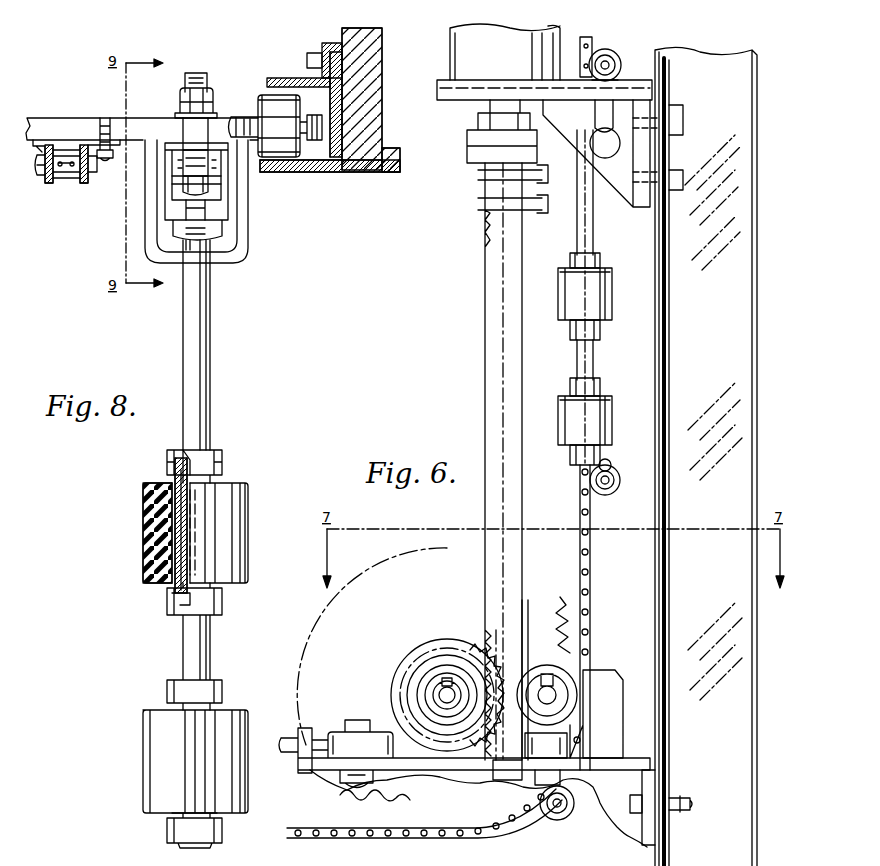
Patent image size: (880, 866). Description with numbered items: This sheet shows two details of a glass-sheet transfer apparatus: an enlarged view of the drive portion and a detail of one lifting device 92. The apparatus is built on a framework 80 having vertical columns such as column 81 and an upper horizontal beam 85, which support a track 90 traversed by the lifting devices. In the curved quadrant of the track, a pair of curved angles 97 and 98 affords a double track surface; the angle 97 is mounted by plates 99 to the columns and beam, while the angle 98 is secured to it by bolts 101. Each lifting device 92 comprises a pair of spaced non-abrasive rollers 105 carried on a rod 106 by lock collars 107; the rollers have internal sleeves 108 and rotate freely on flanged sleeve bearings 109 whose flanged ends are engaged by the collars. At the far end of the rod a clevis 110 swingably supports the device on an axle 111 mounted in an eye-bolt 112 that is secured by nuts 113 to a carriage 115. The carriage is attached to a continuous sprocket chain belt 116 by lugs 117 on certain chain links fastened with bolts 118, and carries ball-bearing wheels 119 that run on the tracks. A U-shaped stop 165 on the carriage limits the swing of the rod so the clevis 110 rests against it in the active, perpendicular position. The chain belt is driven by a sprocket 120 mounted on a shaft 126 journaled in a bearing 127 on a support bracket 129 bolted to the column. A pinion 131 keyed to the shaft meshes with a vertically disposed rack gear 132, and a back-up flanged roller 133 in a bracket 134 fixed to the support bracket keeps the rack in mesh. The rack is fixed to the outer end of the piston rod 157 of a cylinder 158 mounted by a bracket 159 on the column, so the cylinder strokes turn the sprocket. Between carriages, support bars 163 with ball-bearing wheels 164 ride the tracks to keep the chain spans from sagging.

In FIG. 6, the framework 80 is at (744, 150).
In FIG. 6, the column 81 is at (722, 176).
In FIG. 8, the upper horizontally disposed beam 85 is at (372, 94).
In FIG. 8, the track 90 is at (279, 172).
In FIG. 8, the lifting device 92 is at (142, 509).
In FIG. 6, the lifting device 92 is at (608, 274).
In FIG. 8, the angle 97 is at (310, 168).
In FIG. 8, the angle 98 is at (285, 78).
In FIG. 8, the plate 99 is at (352, 150).
In FIG. 8, the bolt 101 is at (314, 58).
In FIG. 8, the non-abrasive roller 105 is at (150, 545).
In FIG. 6, the non-abrasive roller 105 is at (595, 300).
In FIG. 8, the rod 106 is at (196, 350).
In FIG. 6, the rod 106 is at (582, 355).
In FIG. 8, the lock collar 107 is at (212, 465).
In FIG. 6, the lock collar 107 is at (595, 380).
In FIG. 8, the internal sleeve 108 is at (176, 559).
In FIG. 8, the flanged sleeve bearing 109 is at (174, 485).
In FIG. 8, the clevis 110 is at (175, 197).
In FIG. 8, the axle 111 is at (165, 190).
In FIG. 8, the eye-bolt 112 is at (190, 144).
In FIG. 8, the nut 113 is at (213, 96).
In FIG. 8, the carriage 115 is at (93, 118).
In FIG. 6, the carriage 115 is at (615, 100).
In FIG. 8, the sprocket chain belt 116 is at (71, 182).
In FIG. 6, the sprocket chain belt 116 is at (592, 44).
In FIG. 8, the lug 117 is at (85, 146).
In FIG. 8, the bolt 118 is at (106, 160).
In FIG. 8, the ball-bearing wheel 119 is at (268, 112).
In FIG. 6, the ball-bearing wheel 119 is at (620, 60).
In FIG. 6, the sprocket 120 is at (540, 633).
In FIG. 6, the shaft 126 is at (447, 693).
In FIG. 6, the bearing 127 is at (406, 666).
In FIG. 6, the support bracket 129 is at (324, 770).
In FIG. 6, the pinion 131 is at (472, 718).
In FIG. 6, the rack gear 132 is at (506, 648).
In FIG. 6, the back-up flanged roller 133 is at (552, 668).
In FIG. 6, the bracket 134 is at (598, 686).
In FIG. 6, the piston rod 157 is at (492, 108).
In FIG. 6, the cylinder 158 is at (484, 56).
In FIG. 6, the bracket 159 is at (622, 126).
In FIG. 6, the support bar 163 is at (611, 470).
In FIG. 6, the ball-bearing wheel 164 is at (615, 489).
In FIG. 8, the U-shaped stop 165 is at (235, 252).